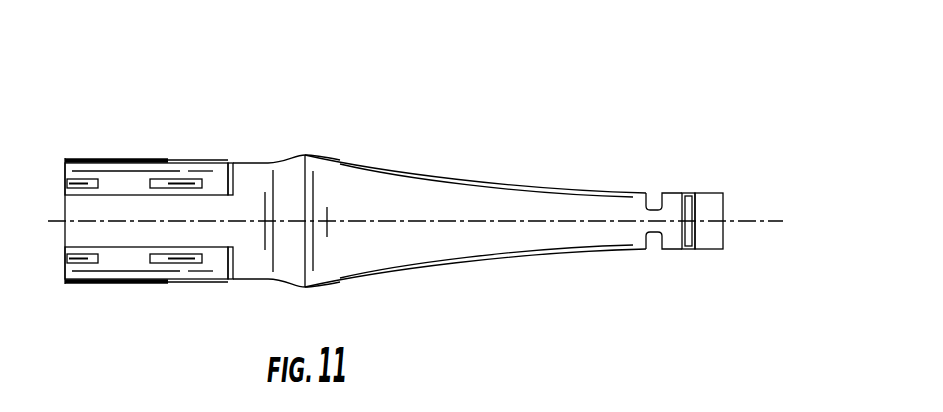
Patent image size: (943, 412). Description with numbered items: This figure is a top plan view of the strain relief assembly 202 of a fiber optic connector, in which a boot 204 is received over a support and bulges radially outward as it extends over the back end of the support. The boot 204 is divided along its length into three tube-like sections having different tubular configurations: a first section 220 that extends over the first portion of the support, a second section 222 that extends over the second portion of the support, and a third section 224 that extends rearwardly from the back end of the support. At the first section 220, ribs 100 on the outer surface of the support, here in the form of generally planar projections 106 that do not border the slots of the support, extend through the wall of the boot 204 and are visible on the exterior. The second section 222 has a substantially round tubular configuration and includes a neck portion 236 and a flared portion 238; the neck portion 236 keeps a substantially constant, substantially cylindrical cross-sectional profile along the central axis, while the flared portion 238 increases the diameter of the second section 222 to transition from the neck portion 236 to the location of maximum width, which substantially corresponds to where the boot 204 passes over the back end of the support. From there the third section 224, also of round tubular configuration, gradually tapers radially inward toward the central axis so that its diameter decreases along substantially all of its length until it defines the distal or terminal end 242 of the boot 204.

The strain relief assembly 202 is at (431, 167).
The boot 204 is at (484, 262).
The first section 220 is at (228, 161).
The second section 222 is at (307, 138).
The third section 224 is at (723, 185).
The neck portion 236 is at (245, 270).
The flared portion 238 is at (287, 263).
The terminal end 242 is at (723, 238).
The rib 100 is at (95, 262).
The projection 106 is at (140, 248).